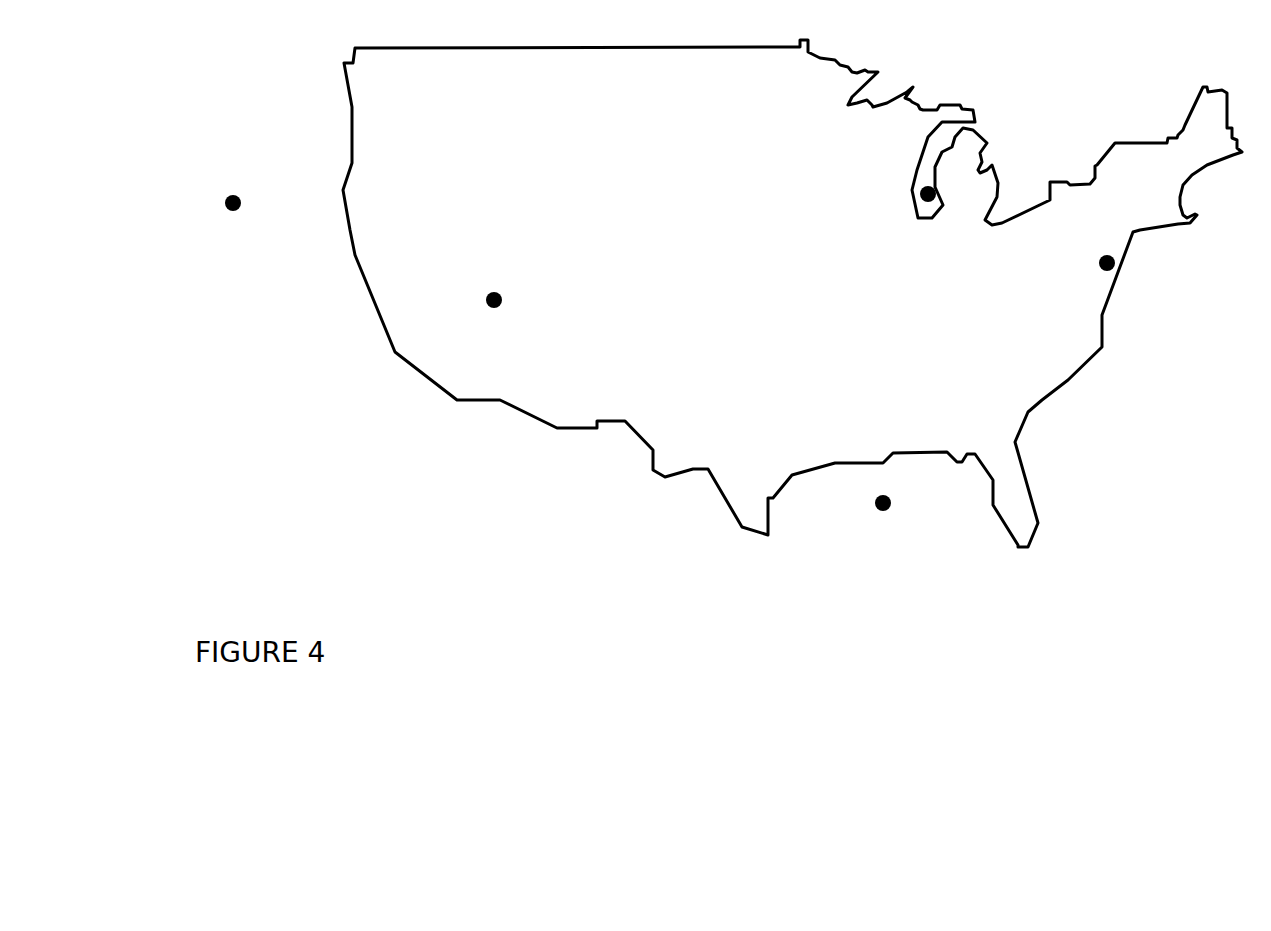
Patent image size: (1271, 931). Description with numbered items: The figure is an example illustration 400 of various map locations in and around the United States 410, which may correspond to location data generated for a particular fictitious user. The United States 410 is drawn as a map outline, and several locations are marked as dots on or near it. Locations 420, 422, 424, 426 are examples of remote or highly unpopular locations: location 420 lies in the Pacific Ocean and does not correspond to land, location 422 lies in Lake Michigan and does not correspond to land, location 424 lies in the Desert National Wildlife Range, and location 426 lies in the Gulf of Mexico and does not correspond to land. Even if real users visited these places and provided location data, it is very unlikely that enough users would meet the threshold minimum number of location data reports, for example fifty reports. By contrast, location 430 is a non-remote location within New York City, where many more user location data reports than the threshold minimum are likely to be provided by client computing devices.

The example illustration 400 is at (267, 606).
The United States 410 is at (452, 398).
The location 420 is at (243, 203).
The location 422 is at (917, 203).
The location 424 is at (503, 302).
The location 426 is at (873, 502).
The location 430 is at (1097, 265).